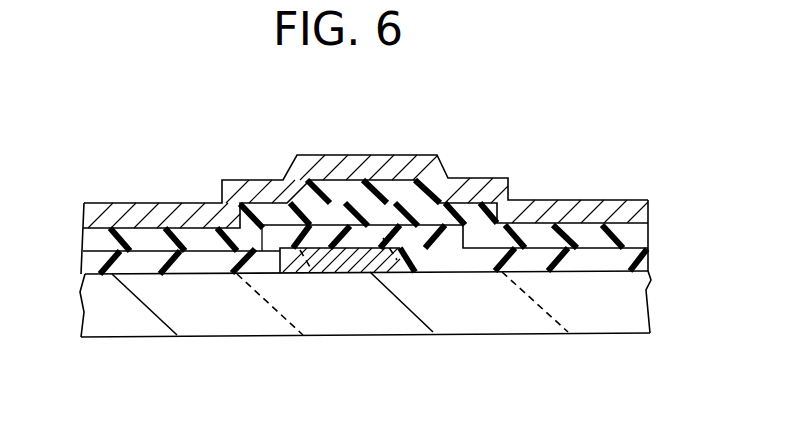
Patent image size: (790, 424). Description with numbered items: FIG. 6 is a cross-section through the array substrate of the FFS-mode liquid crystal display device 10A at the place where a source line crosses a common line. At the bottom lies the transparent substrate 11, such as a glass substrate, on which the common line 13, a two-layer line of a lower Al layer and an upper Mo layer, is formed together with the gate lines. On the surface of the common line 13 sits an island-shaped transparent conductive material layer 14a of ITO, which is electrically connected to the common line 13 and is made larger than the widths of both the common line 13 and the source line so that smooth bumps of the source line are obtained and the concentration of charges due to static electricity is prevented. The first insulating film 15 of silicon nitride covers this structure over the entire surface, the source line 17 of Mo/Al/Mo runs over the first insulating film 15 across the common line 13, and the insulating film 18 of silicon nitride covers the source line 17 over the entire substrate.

The FFS-mode liquid crystal display device 10A is at (237, 100).
The transparent substrate 11 is at (122, 326).
The common line 13 is at (360, 263).
The transparent conductive material layer 14a is at (300, 270).
The first insulating film 15 is at (532, 260).
The source line 17 is at (243, 192).
The insulating film 18 is at (577, 233).